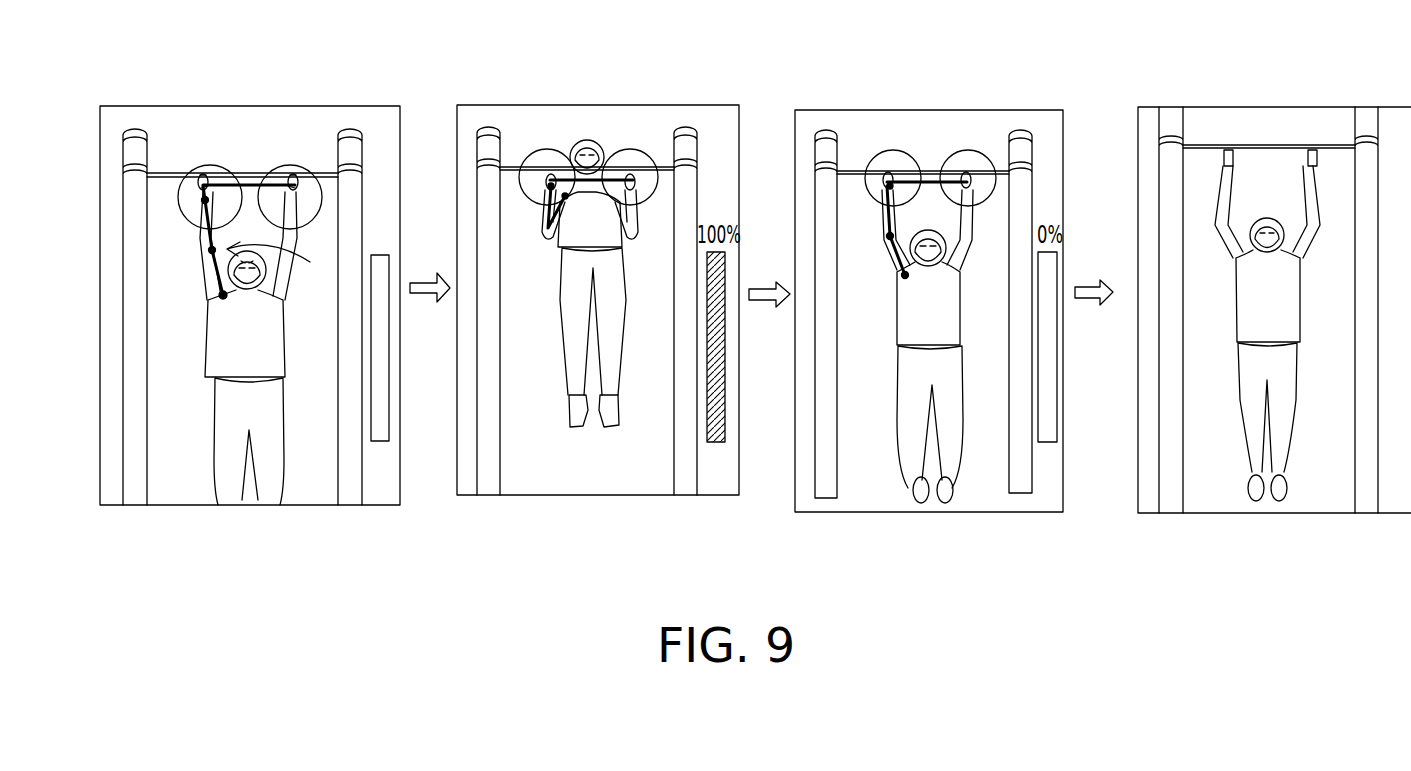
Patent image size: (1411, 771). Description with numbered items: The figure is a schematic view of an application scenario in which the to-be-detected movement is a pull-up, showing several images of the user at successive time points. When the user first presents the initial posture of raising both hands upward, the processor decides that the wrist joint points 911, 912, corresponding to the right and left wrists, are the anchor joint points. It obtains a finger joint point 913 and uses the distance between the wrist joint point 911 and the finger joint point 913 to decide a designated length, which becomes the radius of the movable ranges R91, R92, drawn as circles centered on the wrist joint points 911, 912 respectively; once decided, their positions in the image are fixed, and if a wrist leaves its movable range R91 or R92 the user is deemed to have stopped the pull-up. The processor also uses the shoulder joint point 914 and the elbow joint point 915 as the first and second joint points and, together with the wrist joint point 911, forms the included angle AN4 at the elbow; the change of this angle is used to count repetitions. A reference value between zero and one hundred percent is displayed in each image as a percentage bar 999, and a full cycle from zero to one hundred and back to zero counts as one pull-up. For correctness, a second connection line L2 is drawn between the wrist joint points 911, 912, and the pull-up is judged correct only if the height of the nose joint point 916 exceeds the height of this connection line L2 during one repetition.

The wrist joint point 911 is at (200, 197).
The wrist joint point 912 is at (293, 172).
The finger joint point 913 is at (203, 172).
The shoulder joint point 914 is at (219, 297).
The elbow joint point 915 is at (208, 250).
The nose joint point 916 is at (276, 290).
The movable range R91 is at (185, 225).
The movable range R92 is at (323, 193).
The second connection line L2 is at (248, 178).
The included angle AN4 is at (282, 268).
The percentage bar 999 is at (392, 347).